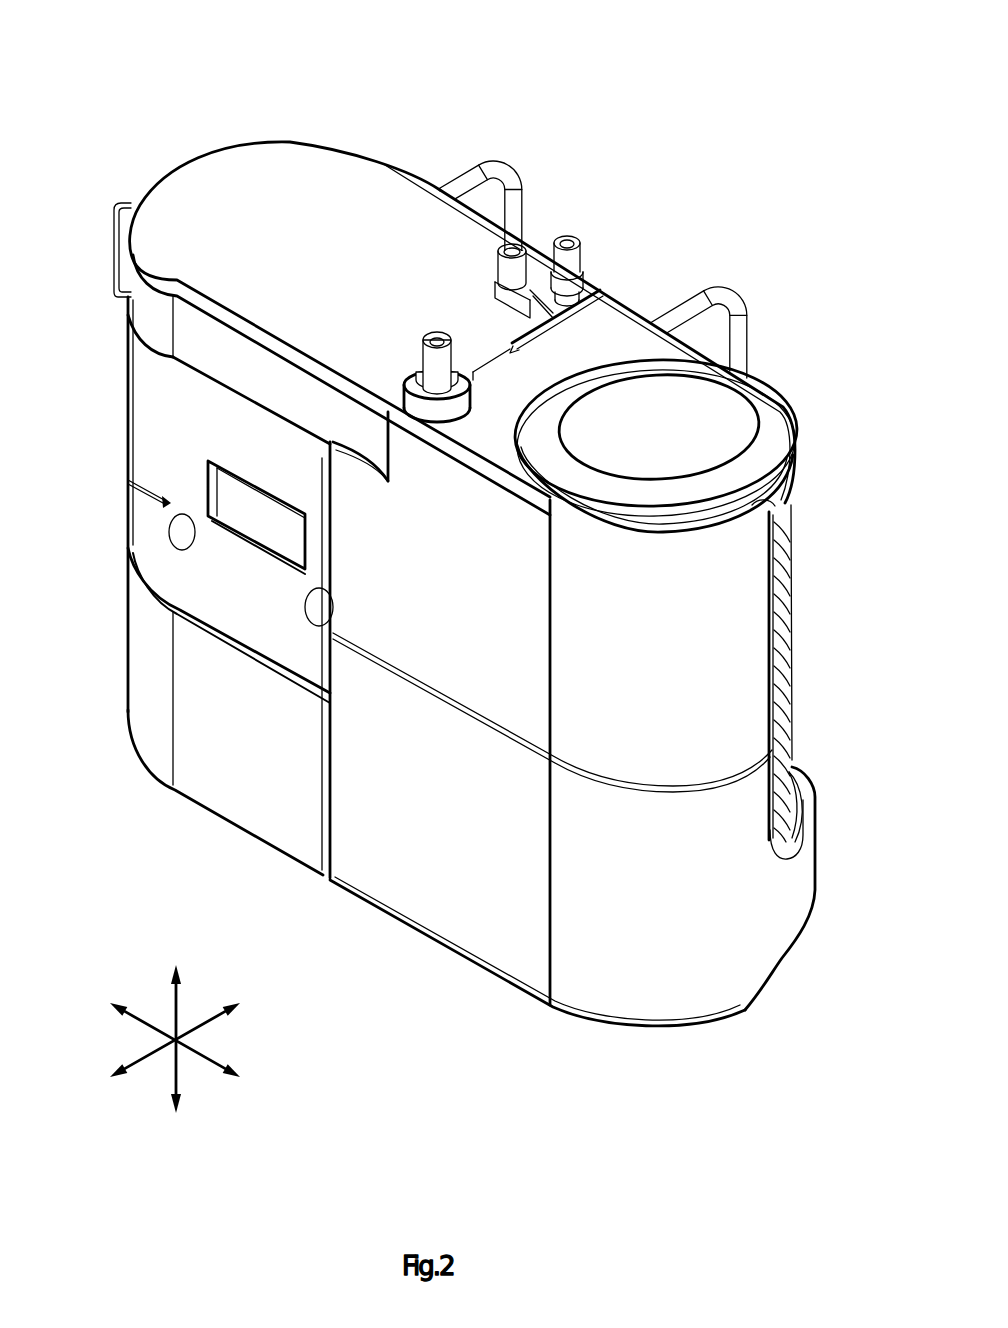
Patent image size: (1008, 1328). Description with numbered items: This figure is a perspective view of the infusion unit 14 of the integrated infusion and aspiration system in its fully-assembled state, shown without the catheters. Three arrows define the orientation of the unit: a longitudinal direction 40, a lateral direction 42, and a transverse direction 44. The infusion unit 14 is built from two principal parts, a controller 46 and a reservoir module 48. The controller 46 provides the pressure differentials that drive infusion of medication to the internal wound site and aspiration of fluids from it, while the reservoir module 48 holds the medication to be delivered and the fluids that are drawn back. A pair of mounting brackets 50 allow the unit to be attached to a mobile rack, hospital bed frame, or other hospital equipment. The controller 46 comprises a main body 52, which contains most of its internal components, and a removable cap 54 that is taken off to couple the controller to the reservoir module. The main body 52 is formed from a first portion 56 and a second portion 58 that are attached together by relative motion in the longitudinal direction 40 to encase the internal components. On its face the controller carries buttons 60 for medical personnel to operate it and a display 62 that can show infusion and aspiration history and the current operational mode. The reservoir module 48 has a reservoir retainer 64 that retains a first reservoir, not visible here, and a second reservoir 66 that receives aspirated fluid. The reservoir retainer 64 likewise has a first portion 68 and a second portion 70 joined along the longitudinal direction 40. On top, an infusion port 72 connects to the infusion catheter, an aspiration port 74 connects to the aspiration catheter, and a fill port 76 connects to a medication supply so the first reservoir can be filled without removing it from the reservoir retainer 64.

The infusion unit 14 is at (576, 104).
The longitudinal direction 40 is at (173, 1005).
The lateral direction 42 is at (210, 1053).
The transverse direction 44 is at (212, 1017).
The controller 46 is at (280, 72).
The reservoir module 48 is at (565, 1065).
The mounting brackets 50 is at (520, 174).
The main body 52 is at (100, 512).
The cap 54 is at (172, 207).
The first portion 56 is at (128, 418).
The second portion 58 is at (143, 660).
The buttons 60 is at (313, 615).
The display 62 is at (220, 493).
The reservoir retainer 64 is at (800, 708).
The second reservoir 66 is at (767, 443).
The first portion 68 is at (607, 330).
The second portion 70 is at (760, 917).
The infusion port 72 is at (581, 268).
The aspiration port 74 is at (521, 268).
The fill port 76 is at (428, 360).